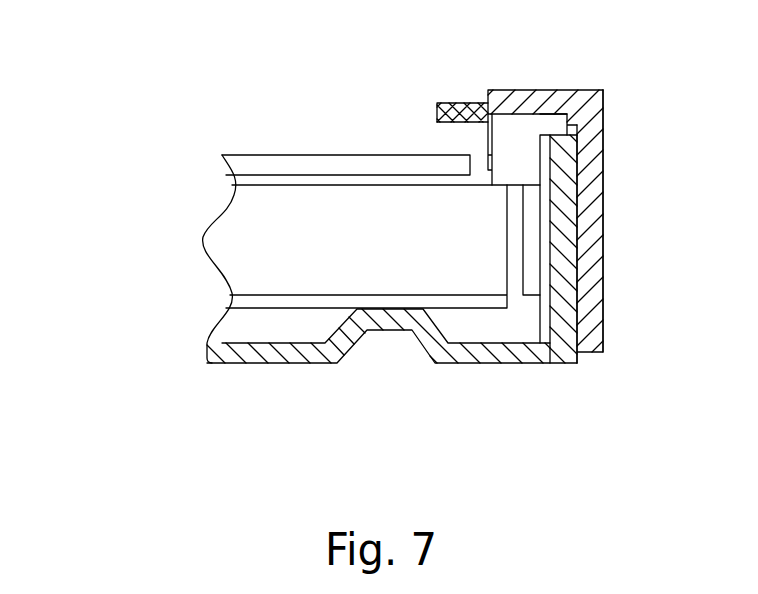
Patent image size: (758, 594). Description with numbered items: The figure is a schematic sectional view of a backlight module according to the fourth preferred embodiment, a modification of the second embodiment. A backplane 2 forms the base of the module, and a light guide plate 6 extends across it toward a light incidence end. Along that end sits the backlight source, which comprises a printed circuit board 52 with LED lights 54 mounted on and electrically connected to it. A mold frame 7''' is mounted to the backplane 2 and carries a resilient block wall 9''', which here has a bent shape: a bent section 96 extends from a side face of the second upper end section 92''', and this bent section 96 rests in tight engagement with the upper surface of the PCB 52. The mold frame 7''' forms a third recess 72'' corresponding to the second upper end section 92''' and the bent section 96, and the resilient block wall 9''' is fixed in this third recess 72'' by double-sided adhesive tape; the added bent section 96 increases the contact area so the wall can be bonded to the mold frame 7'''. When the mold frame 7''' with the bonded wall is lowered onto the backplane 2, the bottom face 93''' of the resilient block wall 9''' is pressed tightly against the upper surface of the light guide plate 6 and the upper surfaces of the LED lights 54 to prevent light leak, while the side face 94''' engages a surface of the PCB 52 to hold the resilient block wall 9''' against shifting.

The backplane 2 is at (300, 347).
The light guide plate 6 is at (232, 243).
The mold frame 7''' is at (635, 208).
The resilient block wall 9''' is at (410, 111).
The printed circuit board 52 is at (548, 321).
The LED lights 54 is at (530, 260).
The third recess 72'' is at (520, 177).
The second upper end section 92''' is at (429, 66).
The bottom face 93''' is at (623, 249).
The side face 94''' is at (618, 230).
The bent section 96 is at (550, 115).